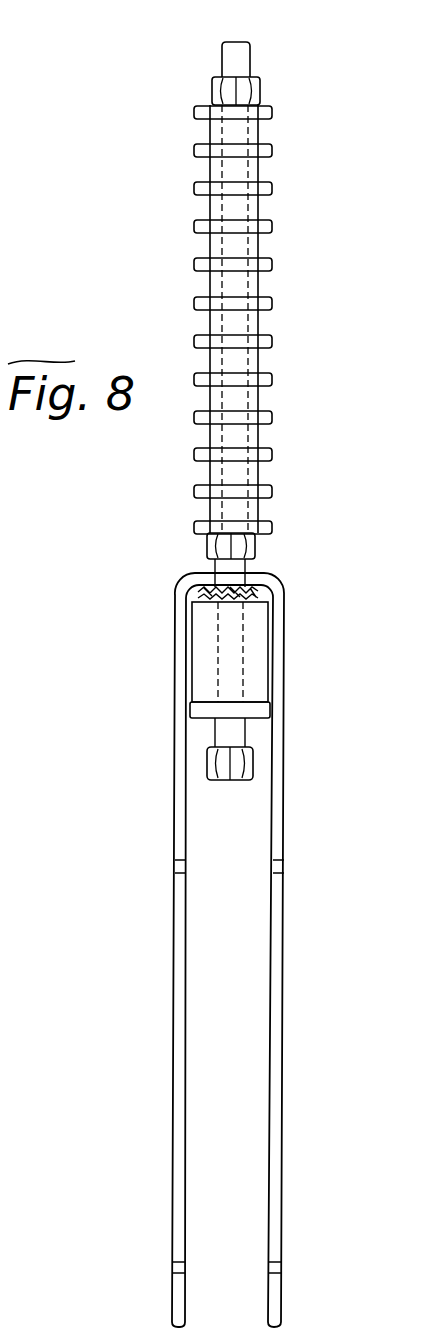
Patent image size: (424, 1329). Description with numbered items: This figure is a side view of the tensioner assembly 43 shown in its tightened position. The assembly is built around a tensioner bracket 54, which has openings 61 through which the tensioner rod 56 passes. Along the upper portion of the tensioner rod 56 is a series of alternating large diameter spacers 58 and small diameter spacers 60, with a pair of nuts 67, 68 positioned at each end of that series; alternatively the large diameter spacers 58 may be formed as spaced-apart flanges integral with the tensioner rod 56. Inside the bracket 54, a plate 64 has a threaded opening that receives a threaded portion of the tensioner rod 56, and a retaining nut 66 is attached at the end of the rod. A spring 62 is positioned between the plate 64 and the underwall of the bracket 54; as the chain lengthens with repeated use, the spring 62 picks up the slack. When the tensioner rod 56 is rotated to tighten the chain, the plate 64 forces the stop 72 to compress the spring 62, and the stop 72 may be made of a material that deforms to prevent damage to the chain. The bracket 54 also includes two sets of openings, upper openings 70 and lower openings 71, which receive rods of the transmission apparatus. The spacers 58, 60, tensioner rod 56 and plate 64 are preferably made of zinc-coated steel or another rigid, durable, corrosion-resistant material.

The tensioner assembly 43 is at (203, 56).
The tensioner rod 56 is at (250, 68).
The nut 67 is at (261, 92).
The large diameter spacers 58 is at (273, 113).
The small diameter spacers 60 is at (259, 135).
The nut 68 is at (256, 546).
The openings 61 is at (230, 584).
The spring 62 is at (282, 592).
The stop 72 is at (263, 648).
The plate 64 is at (270, 706).
The retaining nut 66 is at (253, 752).
The tensioner bracket 54 is at (175, 975).
The upper openings 70 is at (175, 870).
The lower opening 71 is at (173, 1267).